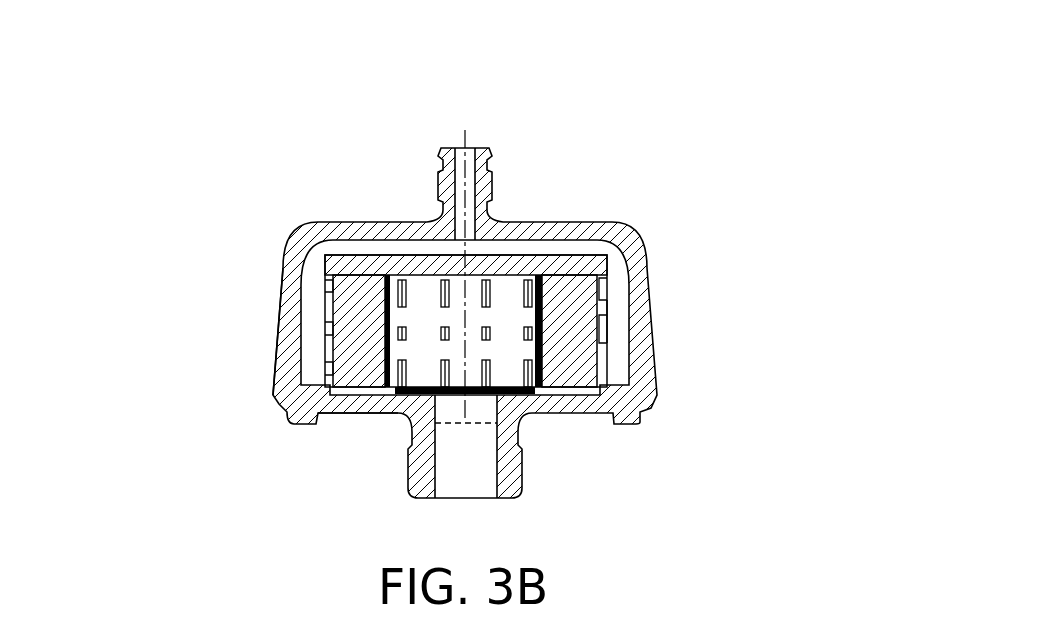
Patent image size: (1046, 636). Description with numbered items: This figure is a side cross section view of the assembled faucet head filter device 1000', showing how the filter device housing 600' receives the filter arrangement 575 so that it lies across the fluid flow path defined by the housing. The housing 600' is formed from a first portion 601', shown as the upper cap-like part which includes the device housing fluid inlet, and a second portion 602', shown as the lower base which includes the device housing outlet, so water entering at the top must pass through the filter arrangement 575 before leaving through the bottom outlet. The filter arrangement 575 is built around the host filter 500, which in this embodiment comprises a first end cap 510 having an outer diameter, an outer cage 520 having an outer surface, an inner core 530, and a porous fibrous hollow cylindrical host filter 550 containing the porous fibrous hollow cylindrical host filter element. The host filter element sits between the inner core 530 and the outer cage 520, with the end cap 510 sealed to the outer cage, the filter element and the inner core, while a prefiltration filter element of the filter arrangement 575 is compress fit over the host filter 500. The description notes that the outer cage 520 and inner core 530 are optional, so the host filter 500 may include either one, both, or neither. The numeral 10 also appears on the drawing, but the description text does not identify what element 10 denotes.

The faucet head filter device 1000' is at (471, 42).
The cap housing 10 is at (627, 298).
The host filter 500 is at (487, 253).
The first end cap 510 is at (547, 282).
The outer cage 520 is at (605, 328).
The inner core 530 is at (422, 302).
The porous fibrous hollow cylindrical host filter 550 is at (355, 296).
The filter arrangement 575 is at (600, 105).
The filter device housing 600' is at (93, 359).
The first portion 601' is at (224, 331).
The second portion 602' is at (273, 424).